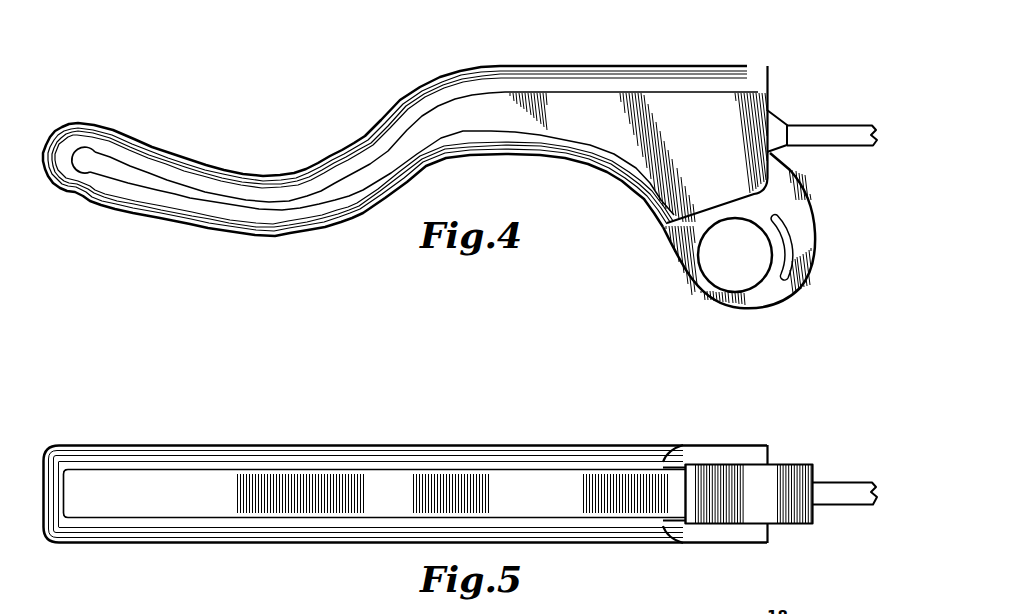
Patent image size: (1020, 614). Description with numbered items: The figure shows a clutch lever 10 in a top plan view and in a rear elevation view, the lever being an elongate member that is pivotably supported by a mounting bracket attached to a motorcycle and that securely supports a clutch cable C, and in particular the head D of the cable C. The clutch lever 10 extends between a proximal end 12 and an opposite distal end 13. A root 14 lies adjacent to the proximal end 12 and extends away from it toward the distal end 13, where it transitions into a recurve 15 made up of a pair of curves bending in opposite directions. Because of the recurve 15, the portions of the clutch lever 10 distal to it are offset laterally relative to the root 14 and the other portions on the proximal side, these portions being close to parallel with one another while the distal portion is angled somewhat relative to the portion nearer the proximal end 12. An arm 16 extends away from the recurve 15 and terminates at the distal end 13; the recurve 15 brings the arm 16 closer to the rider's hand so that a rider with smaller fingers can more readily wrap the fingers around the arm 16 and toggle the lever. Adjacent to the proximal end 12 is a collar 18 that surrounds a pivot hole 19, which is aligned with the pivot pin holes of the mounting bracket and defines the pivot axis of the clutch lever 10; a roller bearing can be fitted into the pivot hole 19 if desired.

In FIG. 4, the clutch lever 10 is at (279, 106).
In FIG. 5, the clutch lever 10 is at (349, 405).
In FIG. 4, the proximal end 12 is at (702, 112).
In FIG. 5, the proximal end 12 is at (687, 493).
In FIG. 4, the distal end 13 is at (78, 150).
In FIG. 5, the distal end 13 is at (70, 490).
In FIG. 4, the root 14 is at (660, 117).
In FIG. 5, the root 14 is at (648, 455).
In FIG. 4, the recurve 15 is at (375, 165).
In FIG. 5, the recurve 15 is at (400, 455).
In FIG. 4, the arm 16 is at (185, 187).
In FIG. 5, the arm 16 is at (205, 452).
In FIG. 4, the collar 18 is at (764, 295).
In FIG. 5, the collar 18 is at (773, 500).
In FIG. 4, the pivot hole 19 is at (746, 264).
In FIG. 4, the clutch cable C is at (851, 130).
In FIG. 5, the clutch cable C is at (843, 490).
In FIG. 4, the head D is at (775, 120).